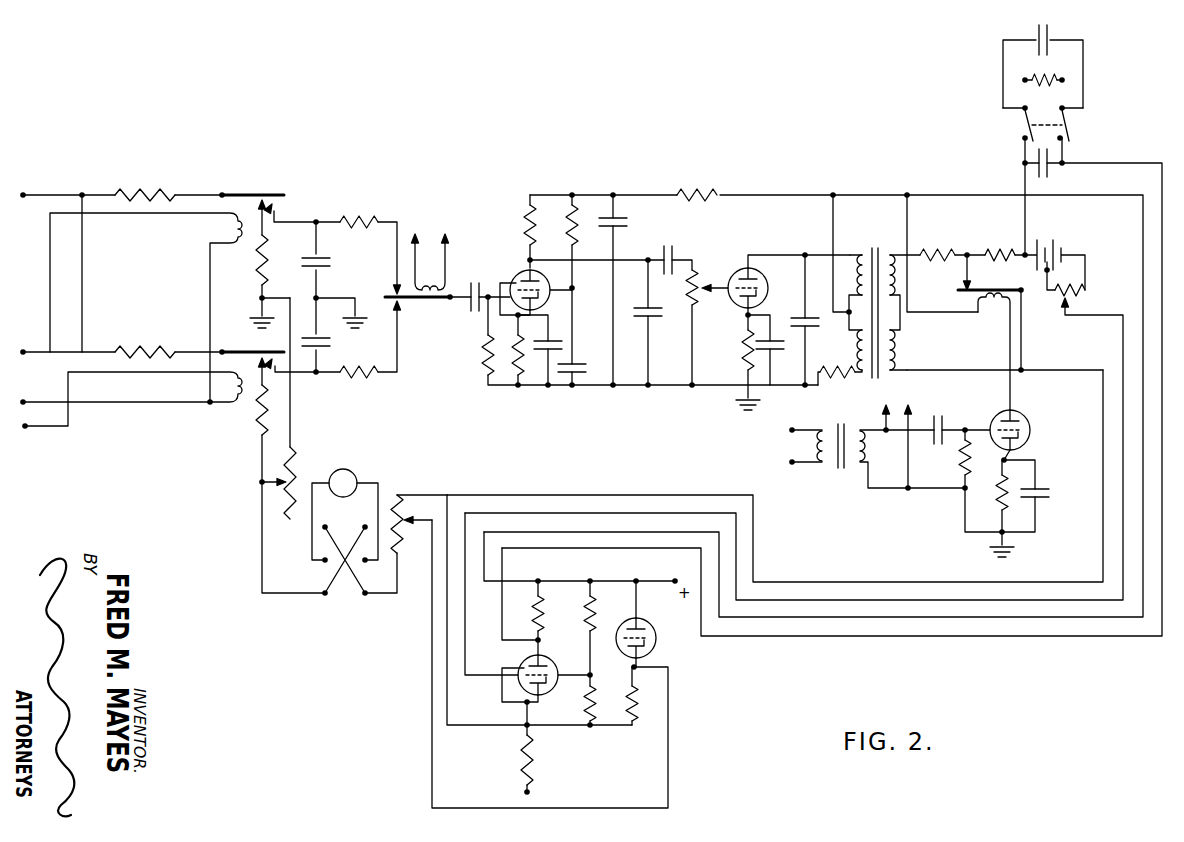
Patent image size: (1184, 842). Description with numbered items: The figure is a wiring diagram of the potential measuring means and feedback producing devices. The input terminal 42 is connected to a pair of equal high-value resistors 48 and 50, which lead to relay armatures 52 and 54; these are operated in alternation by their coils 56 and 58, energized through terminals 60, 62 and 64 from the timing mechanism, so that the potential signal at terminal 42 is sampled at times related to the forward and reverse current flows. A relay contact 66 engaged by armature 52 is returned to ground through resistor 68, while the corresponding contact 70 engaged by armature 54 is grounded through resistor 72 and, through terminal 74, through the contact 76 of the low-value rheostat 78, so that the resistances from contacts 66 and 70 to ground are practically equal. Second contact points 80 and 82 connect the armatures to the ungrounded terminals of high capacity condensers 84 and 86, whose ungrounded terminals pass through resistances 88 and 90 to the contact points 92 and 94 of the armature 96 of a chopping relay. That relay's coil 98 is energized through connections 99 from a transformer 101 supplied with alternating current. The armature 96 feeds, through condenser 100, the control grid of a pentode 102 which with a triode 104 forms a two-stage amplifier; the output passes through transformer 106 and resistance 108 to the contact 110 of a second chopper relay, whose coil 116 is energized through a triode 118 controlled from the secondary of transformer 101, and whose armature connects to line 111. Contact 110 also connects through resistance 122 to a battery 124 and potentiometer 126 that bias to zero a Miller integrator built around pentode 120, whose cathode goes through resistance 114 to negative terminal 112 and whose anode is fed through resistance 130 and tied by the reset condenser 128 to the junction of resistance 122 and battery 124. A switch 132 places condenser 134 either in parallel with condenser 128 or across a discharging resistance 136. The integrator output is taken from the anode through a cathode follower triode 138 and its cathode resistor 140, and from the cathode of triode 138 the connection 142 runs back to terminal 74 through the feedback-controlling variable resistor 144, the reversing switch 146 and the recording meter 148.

The terminal 42 is at (25, 193).
The resistor 48 is at (150, 193).
The resistor 50 is at (133, 351).
The relay armature 52 is at (255, 193).
The relay armature 54 is at (242, 351).
The coil 56 is at (219, 224).
The coil 58 is at (225, 402).
The terminal 60 is at (17, 398).
The terminal 62 is at (17, 351).
The terminal 64 is at (24, 428).
The relay contact 66 is at (260, 223).
The resistor 68 is at (265, 265).
The contact 70 is at (260, 395).
The resistor 72 is at (290, 408).
The terminal 74 is at (262, 482).
The contact 76 is at (279, 470).
The rheostat 78 is at (302, 476).
The second contact point 80 is at (280, 204).
The second contact point 82 is at (285, 355).
The high capacity condenser 84 is at (331, 258).
The high capacity condenser 86 is at (331, 347).
The resistance 88 is at (358, 218).
The resistance 90 is at (354, 374).
The contact point 92 is at (390, 290).
The contact point 94 is at (396, 305).
The armature 96 is at (422, 299).
The coil 98 is at (440, 283).
The connections 99 is at (443, 230).
The condenser 100 is at (472, 307).
The transformer 101 is at (836, 466).
The pentode 102 is at (512, 274).
The triode 104 is at (735, 270).
The transformer 106 is at (869, 239).
The resistance 108 is at (930, 250).
The contact 110 is at (974, 286).
The line 111 is at (1052, 370).
The negative potential terminal 112 is at (537, 790).
The resistance 114 is at (536, 749).
The coil 116 is at (992, 306).
The triode 118 is at (1025, 420).
The pentode 120 is at (516, 666).
The resistance 122 is at (997, 250).
The battery 124 is at (1068, 244).
The potentiometer 126 is at (1087, 291).
The condenser 128 is at (1049, 166).
The resistance 130 is at (538, 595).
The switch 132 is at (1080, 118).
The condenser 134 is at (1048, 32).
The discharging resistance 136 is at (1012, 92).
The triode 138 is at (668, 616).
The cathode resistor 140 is at (626, 701).
The connection 142 is at (668, 728).
The variable resistor 144 is at (404, 519).
The reversing switch 146 is at (342, 587).
The meter 148 is at (355, 473).